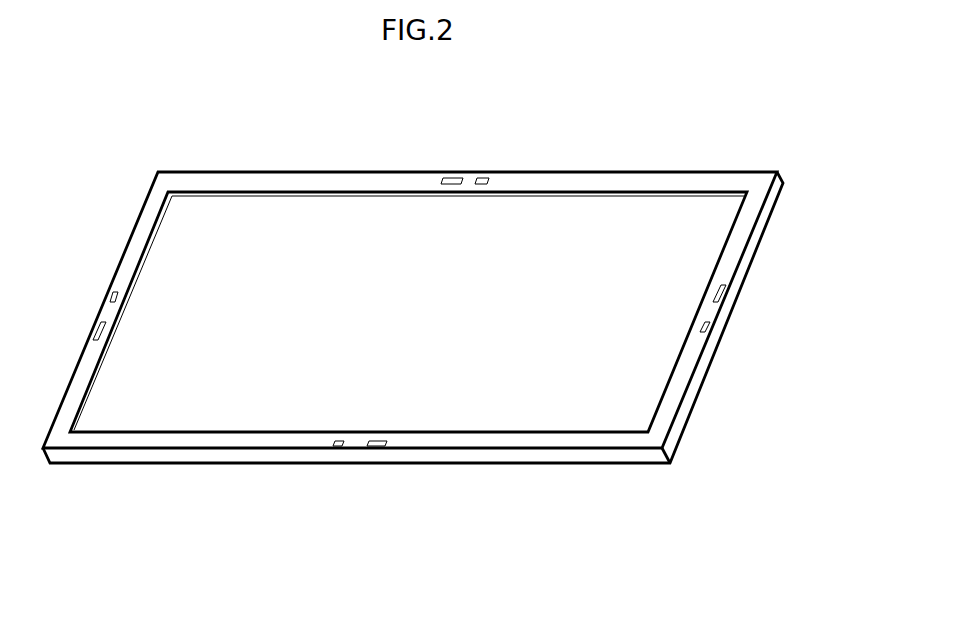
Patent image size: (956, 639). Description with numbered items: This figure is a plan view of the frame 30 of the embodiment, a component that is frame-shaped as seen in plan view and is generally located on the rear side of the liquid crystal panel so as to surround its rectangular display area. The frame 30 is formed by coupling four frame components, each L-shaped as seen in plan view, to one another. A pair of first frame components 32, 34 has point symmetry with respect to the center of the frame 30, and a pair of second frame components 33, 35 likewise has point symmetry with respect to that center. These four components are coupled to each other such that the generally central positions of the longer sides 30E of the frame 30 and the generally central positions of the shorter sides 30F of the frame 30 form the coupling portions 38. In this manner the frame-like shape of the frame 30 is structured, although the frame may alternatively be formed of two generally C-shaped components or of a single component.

The frame 30 is at (280, 152).
The longer sides 30E is at (601, 168).
The shorter sides 30F is at (77, 355).
The first frame component 32 is at (238, 456).
The second frame component 33 is at (617, 456).
The first frame component 34 is at (665, 180).
The second frame component 35 is at (337, 180).
The coupling portions 38 is at (459, 192).